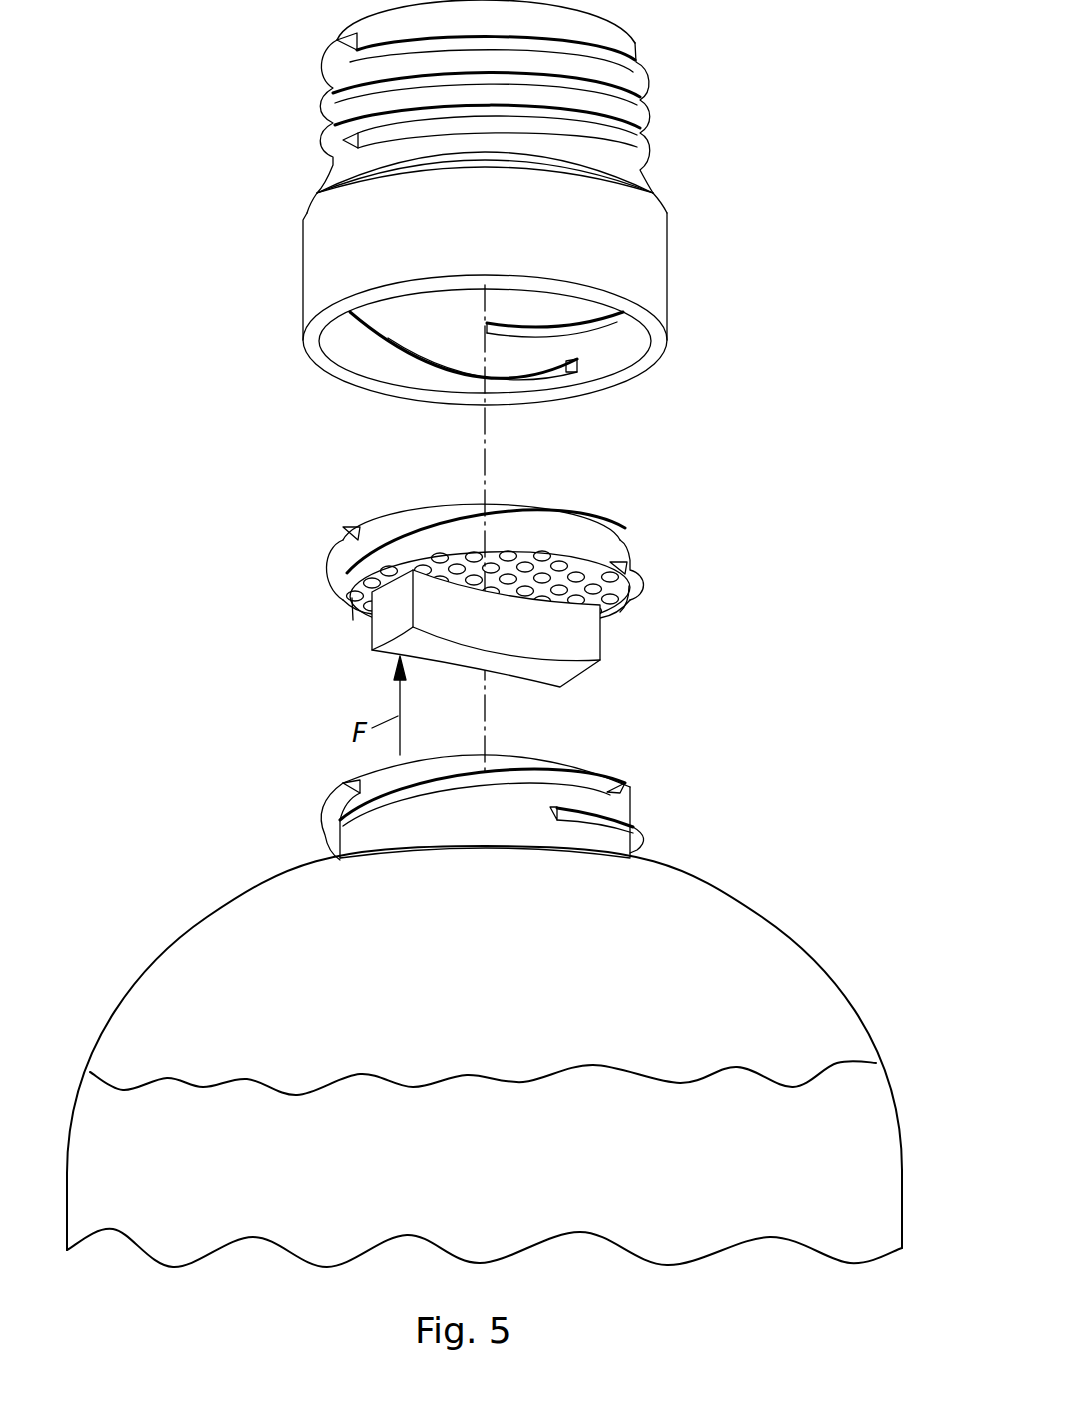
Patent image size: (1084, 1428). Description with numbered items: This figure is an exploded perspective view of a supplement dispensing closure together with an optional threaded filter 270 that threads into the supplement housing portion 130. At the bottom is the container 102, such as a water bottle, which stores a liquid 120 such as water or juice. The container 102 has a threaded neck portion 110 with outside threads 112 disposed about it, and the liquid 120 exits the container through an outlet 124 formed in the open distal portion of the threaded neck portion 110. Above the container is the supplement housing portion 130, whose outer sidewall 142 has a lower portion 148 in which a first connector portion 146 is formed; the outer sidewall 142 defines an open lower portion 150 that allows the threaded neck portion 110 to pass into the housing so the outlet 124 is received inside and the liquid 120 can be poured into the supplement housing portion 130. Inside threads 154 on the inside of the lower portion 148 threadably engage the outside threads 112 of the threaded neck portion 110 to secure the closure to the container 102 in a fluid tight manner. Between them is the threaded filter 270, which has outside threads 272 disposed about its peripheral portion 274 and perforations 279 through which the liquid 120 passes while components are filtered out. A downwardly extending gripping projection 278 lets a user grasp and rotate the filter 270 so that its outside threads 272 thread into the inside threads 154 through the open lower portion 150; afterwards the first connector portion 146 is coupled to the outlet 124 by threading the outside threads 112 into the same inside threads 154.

The container 102 is at (484, 975).
The threaded neck portion 110 is at (544, 771).
The outside threads 112 is at (647, 832).
The liquid 120 is at (483, 1077).
The outlet 124 is at (435, 750).
The supplement housing portion 130 is at (516, 213).
The outer sidewall 142 is at (660, 348).
The first connector portion 146 is at (667, 275).
The lower portion 148 is at (667, 298).
The open lower portion 150 is at (353, 350).
The inside threads 154 is at (387, 340).
The threaded filter 270 is at (544, 586).
The outside threads 272 is at (492, 555).
The peripheral portion 274 is at (615, 547).
The gripping projection 278 is at (557, 673).
The perforations 279 is at (597, 583).